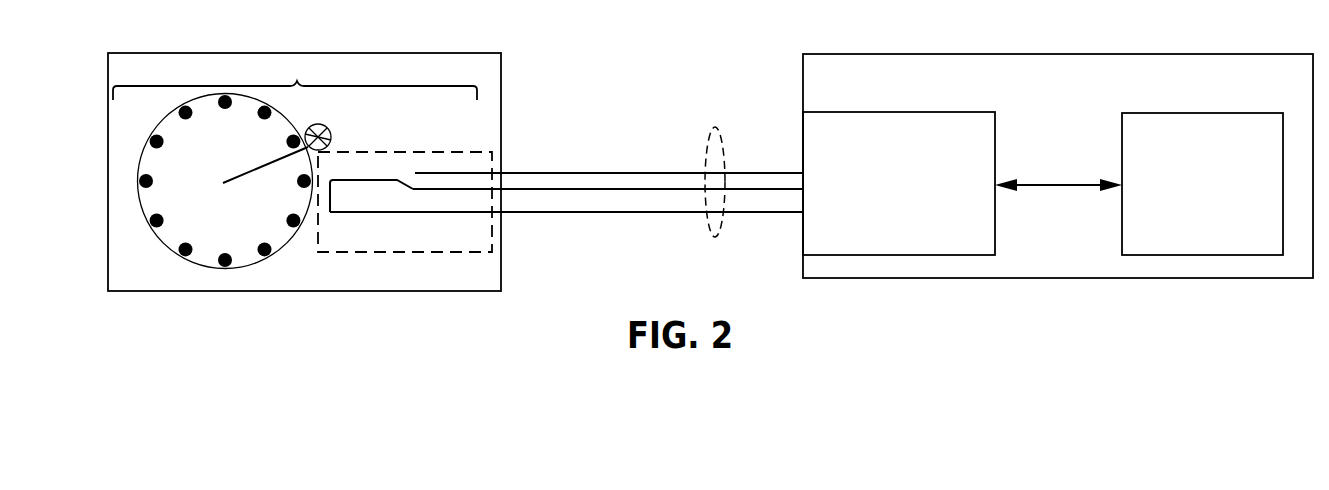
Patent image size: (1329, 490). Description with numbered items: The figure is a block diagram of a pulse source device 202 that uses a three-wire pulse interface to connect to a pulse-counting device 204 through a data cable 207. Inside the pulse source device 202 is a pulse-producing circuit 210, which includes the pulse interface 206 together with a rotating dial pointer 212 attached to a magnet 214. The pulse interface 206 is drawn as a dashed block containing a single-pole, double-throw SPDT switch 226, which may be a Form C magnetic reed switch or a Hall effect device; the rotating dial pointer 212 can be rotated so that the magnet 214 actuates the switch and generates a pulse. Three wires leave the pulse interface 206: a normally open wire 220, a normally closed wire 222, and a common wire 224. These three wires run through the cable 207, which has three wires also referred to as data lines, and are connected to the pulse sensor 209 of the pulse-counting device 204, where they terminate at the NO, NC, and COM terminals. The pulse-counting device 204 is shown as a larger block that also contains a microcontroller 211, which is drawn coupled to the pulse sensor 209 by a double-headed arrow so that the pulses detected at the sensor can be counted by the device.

The pulse source device 202 is at (512, 53).
The pulse-counting device 204 is at (1183, 84).
The pulse interface 206 is at (394, 256).
The data cable 207 is at (715, 127).
The pulse sensor 209 is at (916, 169).
The pulse-producing circuit 210 is at (295, 78).
The microcontroller 211 is at (1220, 207).
The rotating dial pointer 212 is at (199, 269).
The magnet 214 is at (331, 125).
The normally open wire 220 is at (513, 165).
The normally closed wire 222 is at (576, 184).
The common wire 224 is at (597, 214).
The SPDT switch 226 is at (399, 169).